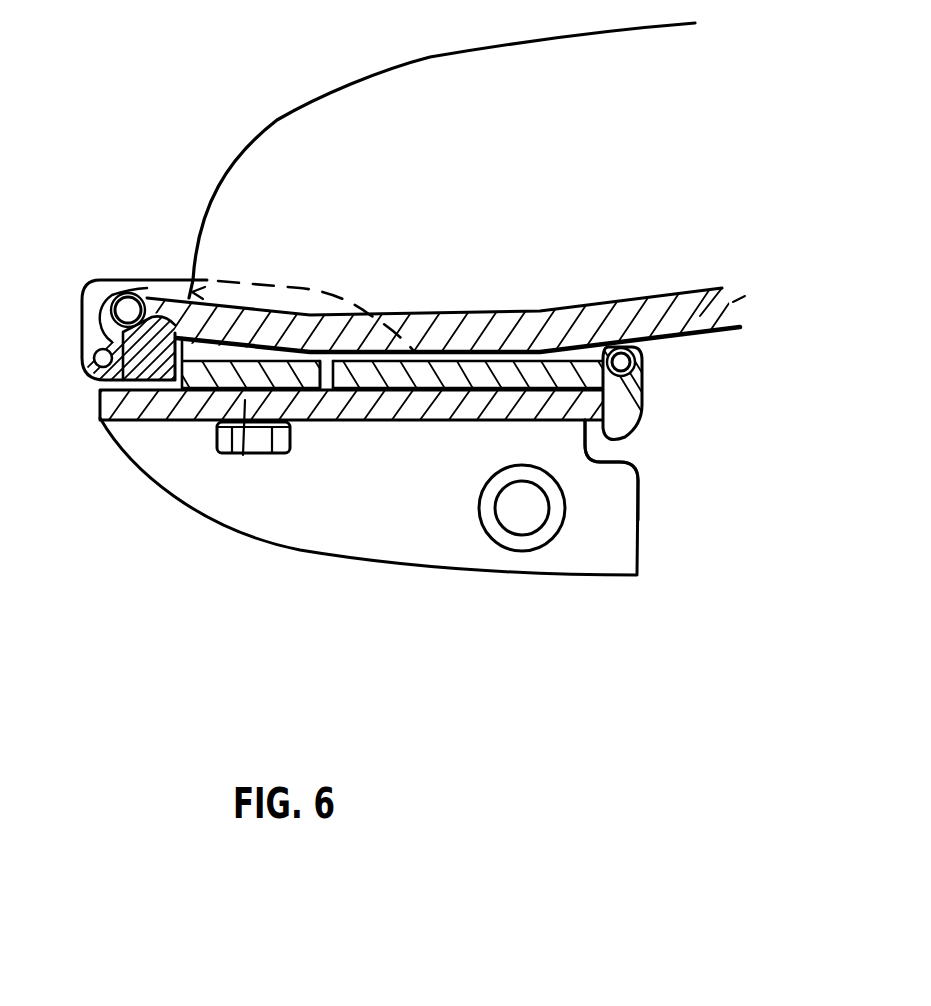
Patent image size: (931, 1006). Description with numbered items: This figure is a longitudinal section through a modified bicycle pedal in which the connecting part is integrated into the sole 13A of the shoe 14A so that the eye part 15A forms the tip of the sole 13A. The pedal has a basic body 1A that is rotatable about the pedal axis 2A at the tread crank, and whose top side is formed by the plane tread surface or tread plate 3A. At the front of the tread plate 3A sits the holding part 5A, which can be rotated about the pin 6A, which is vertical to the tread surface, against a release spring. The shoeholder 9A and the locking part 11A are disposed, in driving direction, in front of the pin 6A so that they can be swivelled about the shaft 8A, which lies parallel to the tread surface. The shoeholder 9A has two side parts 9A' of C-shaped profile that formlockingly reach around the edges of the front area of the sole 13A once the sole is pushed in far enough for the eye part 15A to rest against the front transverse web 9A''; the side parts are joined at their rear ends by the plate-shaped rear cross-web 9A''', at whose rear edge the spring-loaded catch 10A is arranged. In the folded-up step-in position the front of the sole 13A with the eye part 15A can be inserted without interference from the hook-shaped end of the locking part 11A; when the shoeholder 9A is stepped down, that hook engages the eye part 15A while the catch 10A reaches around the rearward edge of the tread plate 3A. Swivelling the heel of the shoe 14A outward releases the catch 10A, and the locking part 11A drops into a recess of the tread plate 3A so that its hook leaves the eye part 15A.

The basic body 1A is at (302, 532).
The pedal axis 2A is at (517, 520).
The tread surface or tread plate 3A is at (572, 420).
The holding part 5A is at (303, 375).
The pin 6A is at (243, 455).
The shaft 8A is at (85, 377).
The shoeholder 9A is at (203, 299).
The side parts 9A' is at (302, 295).
The front transverse web 9A'' is at (173, 313).
The rear cross-web 9A''' is at (408, 407).
The catch 10A is at (638, 398).
The locking part 11A is at (103, 418).
The sole 13A is at (680, 308).
The shoe 14A is at (388, 102).
The eye part 15A is at (147, 278).